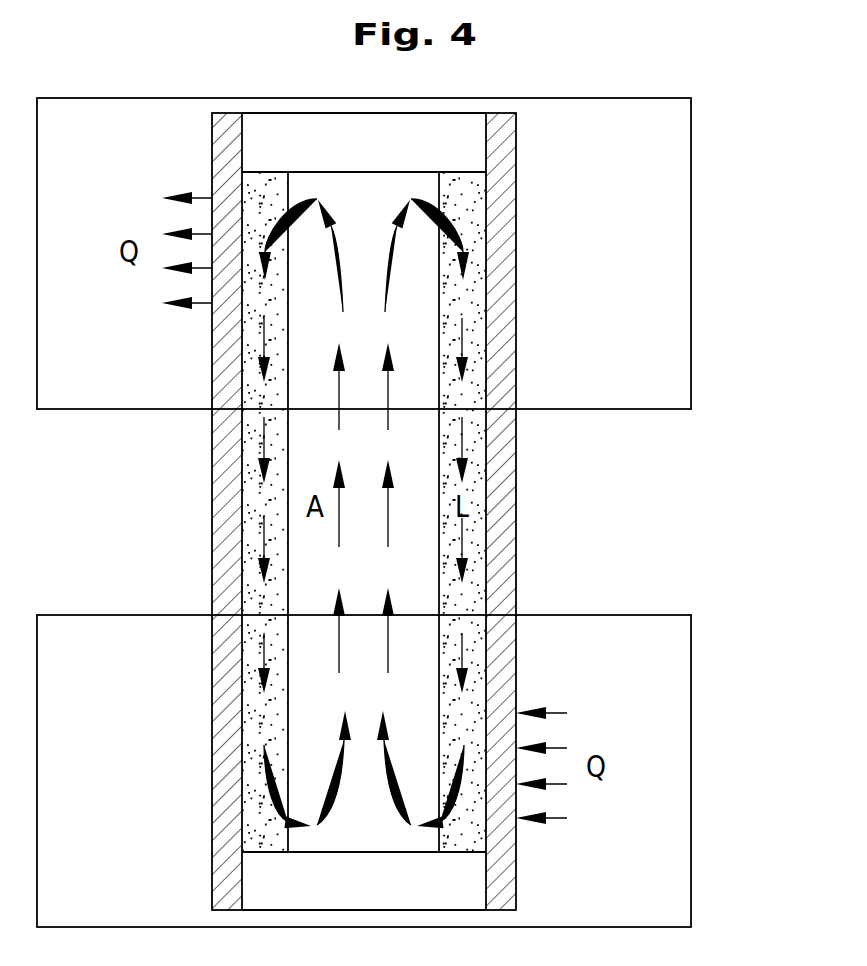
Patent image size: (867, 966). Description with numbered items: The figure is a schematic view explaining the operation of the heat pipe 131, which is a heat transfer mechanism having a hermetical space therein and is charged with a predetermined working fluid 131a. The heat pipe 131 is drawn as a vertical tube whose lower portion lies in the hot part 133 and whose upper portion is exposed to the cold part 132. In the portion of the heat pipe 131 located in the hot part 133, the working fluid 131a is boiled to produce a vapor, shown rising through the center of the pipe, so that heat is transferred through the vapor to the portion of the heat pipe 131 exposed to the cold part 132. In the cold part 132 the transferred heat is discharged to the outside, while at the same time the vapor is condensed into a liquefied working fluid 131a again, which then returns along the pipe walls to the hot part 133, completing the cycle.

The heat pipe 131 is at (168, 524).
The working fluid 131a is at (255, 445).
The cold part 132 is at (653, 250).
The hot part 133 is at (653, 725).